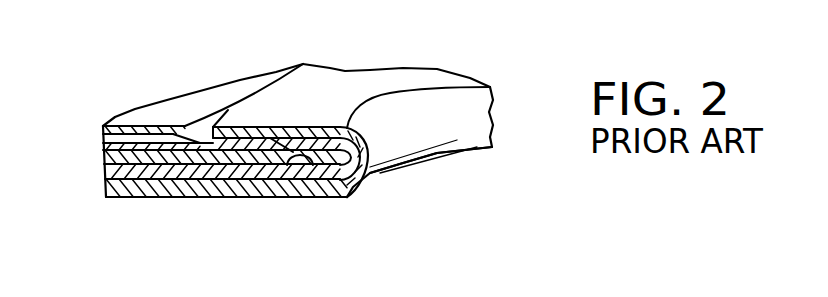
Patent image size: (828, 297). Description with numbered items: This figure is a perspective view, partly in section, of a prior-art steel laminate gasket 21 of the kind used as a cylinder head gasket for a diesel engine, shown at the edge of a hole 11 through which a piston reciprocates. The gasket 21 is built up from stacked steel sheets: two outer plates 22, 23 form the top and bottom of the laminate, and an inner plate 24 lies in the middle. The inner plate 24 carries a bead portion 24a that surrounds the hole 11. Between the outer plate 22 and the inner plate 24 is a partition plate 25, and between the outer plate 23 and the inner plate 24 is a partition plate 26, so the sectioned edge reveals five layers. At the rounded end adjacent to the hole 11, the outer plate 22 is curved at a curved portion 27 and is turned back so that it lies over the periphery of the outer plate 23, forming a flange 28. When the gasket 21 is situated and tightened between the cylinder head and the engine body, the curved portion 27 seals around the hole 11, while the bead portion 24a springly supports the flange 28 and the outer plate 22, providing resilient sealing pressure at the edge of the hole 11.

The hole 11 is at (450, 153).
The steel laminate gasket 21 is at (362, 62).
The outer plate 22 is at (220, 187).
The outer plate 23 is at (157, 115).
The inner plate 24 is at (103, 159).
The bead portion 24a is at (295, 143).
The partition plate 25 is at (108, 196).
The partition plate 26 is at (103, 145).
The curved portion 27 is at (435, 120).
The flange 28 is at (333, 90).